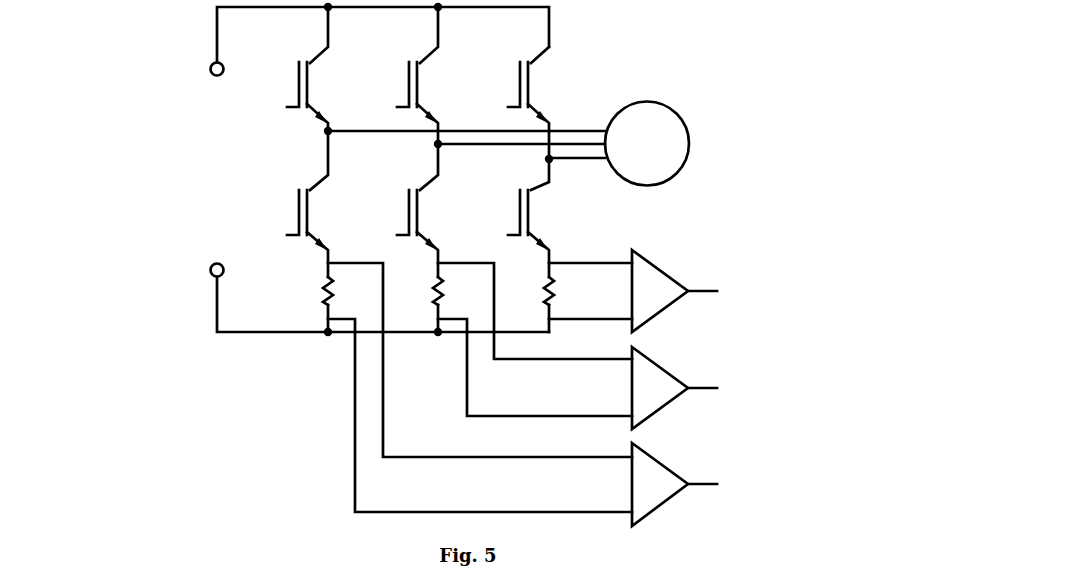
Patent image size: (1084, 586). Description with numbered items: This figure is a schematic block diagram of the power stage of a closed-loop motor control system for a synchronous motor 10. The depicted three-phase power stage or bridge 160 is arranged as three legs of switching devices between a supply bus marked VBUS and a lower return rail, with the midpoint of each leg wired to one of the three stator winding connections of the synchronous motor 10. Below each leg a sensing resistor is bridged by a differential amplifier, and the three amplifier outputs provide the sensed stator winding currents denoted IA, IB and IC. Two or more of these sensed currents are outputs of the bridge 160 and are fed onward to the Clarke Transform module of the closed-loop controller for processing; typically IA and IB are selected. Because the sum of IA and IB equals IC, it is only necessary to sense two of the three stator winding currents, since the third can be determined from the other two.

The 3-phase power stage/bridge 160 is at (168, 92).
The synchronous motor 10 is at (676, 112).
The DC bus voltage VBUS is at (221, 164).
The sensed current I_A IA is at (740, 485).
The sensed current I_B IB is at (740, 389).
The sensed current I_C IC is at (740, 292).